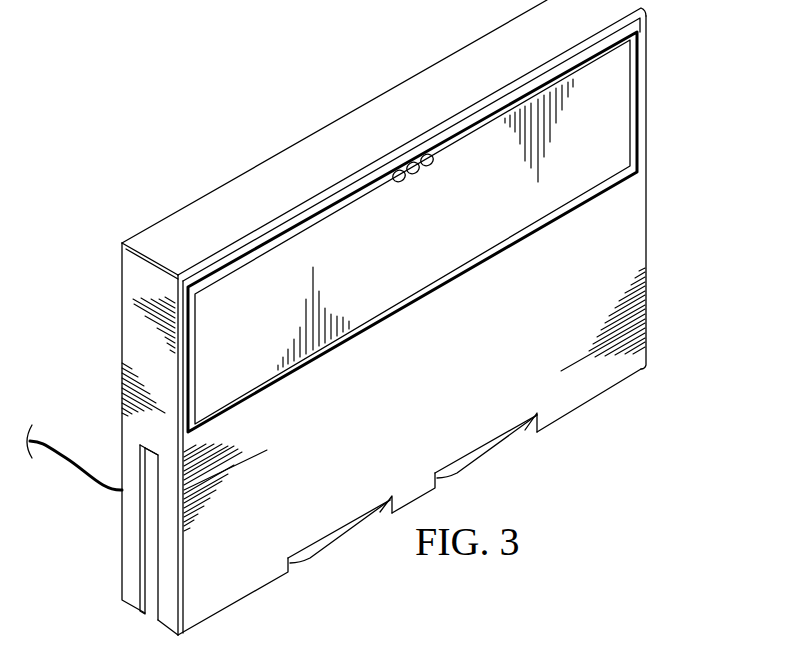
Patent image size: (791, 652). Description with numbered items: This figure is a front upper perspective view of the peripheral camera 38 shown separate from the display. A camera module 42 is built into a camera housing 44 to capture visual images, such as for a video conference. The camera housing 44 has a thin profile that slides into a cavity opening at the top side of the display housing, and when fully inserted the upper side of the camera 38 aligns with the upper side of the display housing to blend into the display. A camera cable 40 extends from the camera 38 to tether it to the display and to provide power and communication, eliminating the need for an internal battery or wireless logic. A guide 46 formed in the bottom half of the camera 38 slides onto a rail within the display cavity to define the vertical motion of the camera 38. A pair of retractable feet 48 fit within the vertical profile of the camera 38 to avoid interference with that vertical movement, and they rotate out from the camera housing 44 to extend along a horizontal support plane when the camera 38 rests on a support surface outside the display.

The peripheral camera 38 is at (303, 98).
The camera cable 40 is at (87, 480).
The camera module 42 is at (420, 173).
The camera housing 44 is at (646, 184).
The guide 46 is at (157, 537).
The retractable feet 48 is at (323, 545).